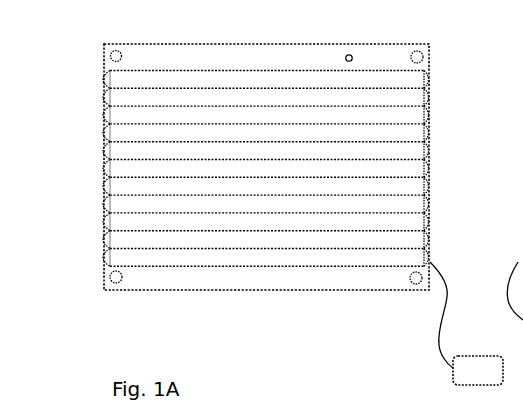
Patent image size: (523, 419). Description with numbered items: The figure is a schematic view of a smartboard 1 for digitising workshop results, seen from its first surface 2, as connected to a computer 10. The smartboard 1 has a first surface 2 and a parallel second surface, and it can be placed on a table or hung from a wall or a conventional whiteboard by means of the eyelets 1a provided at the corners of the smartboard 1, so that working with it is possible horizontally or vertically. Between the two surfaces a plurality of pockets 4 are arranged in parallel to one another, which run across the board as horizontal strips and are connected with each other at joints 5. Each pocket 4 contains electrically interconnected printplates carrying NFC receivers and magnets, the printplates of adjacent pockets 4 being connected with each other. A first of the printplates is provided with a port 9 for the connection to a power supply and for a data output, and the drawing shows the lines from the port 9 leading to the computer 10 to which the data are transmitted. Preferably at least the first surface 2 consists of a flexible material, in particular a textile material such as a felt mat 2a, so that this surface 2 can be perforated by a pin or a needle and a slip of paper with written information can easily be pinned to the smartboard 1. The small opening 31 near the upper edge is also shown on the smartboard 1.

The smartboard 1 is at (239, 150).
The eyelets 1a is at (118, 47).
The first surface 2 is at (243, 169).
The felt mat 2a is at (120, 187).
The pockets 4 is at (415, 170).
The joints 5 is at (426, 141).
The port 9 is at (433, 259).
The computer 10 is at (478, 370).
The opening 31 is at (350, 53).